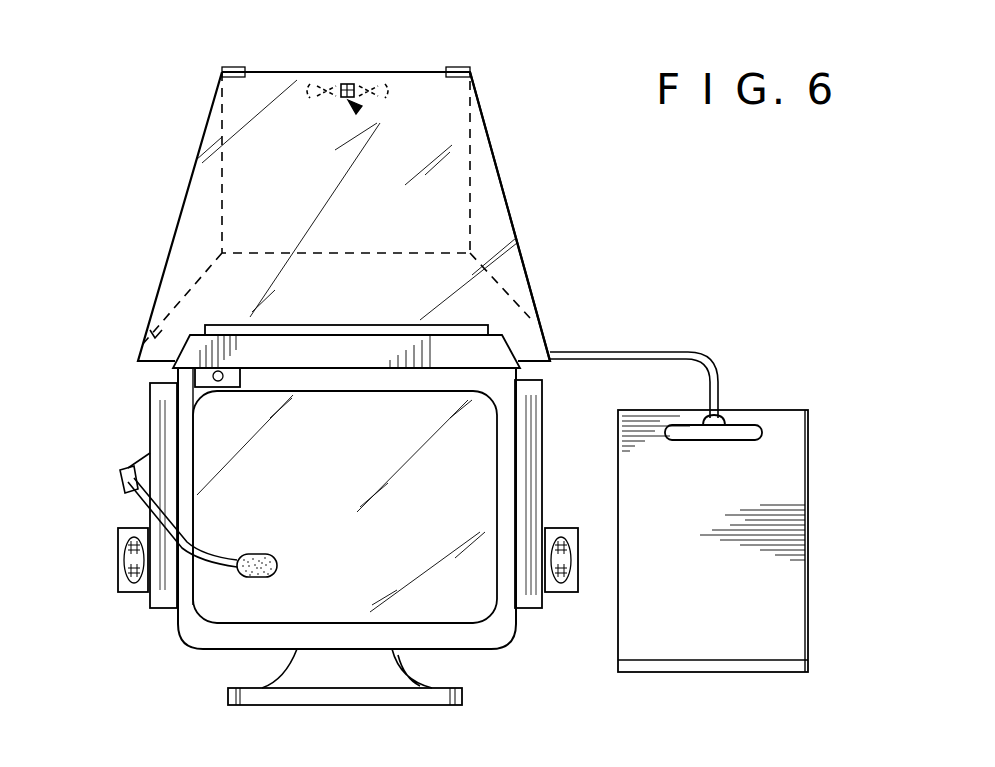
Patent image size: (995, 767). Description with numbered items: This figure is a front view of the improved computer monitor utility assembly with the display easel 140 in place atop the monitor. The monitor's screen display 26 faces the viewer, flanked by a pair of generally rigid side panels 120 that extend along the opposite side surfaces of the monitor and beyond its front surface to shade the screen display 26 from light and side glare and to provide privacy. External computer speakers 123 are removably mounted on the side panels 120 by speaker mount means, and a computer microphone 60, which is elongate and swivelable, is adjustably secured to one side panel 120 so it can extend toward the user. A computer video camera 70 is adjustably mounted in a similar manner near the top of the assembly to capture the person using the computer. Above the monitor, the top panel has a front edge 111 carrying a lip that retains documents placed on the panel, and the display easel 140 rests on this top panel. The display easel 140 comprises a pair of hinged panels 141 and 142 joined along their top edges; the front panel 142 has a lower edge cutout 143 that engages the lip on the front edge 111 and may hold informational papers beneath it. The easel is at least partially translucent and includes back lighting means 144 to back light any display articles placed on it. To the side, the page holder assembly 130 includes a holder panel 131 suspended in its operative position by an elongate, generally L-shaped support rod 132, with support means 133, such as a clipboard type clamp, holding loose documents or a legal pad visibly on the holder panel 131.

The screen display 26 is at (310, 509).
The computer microphone 60 is at (178, 634).
The computer video camera 70 is at (188, 378).
The front edge 111 is at (492, 346).
The side panels 120 is at (150, 425).
The external computer speakers 123 is at (118, 541).
The page holder assembly 130 is at (780, 405).
The holder panel 131 is at (722, 594).
The support rod 132 is at (640, 352).
The support means 133 is at (703, 442).
The display easel 140 is at (487, 122).
The hinged panel 141 is at (492, 162).
The front panel 142 is at (510, 200).
The lower edge cutout 143 is at (308, 325).
The back lighting means 144 is at (358, 110).